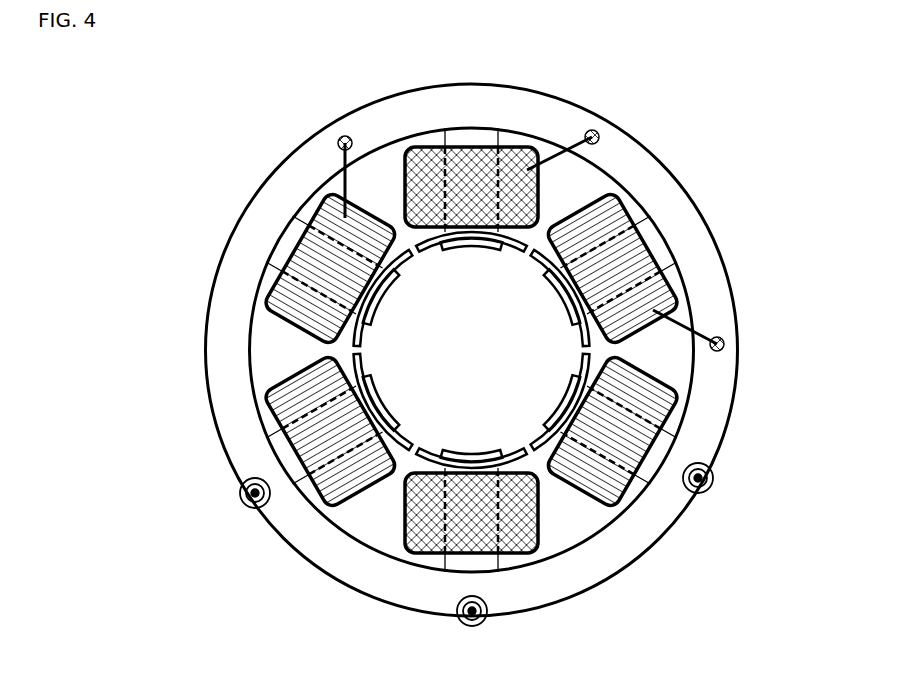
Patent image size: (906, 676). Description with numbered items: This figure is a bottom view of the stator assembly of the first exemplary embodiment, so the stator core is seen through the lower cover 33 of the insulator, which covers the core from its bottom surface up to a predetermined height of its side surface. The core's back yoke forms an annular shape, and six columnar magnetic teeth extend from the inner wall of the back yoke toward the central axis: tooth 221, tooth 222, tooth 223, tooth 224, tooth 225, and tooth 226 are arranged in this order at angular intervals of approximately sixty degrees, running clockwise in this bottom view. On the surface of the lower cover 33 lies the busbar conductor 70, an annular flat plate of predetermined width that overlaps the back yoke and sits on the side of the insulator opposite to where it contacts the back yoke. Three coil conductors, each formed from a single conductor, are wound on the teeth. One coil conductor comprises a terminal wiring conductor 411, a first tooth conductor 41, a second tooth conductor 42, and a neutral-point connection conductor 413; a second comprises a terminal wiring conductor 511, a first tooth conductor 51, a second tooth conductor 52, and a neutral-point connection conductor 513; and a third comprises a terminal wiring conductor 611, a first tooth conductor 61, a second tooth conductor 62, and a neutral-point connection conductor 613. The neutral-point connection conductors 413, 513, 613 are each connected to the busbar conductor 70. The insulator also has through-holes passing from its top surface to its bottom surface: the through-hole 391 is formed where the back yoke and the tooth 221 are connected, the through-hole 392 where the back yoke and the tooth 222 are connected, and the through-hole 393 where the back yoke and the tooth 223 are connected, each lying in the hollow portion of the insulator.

The busbar conductor 70 is at (617, 562).
The lower cover 33 is at (540, 515).
The second tooth conductor 52 is at (417, 157).
The first tooth conductor 51 is at (427, 540).
The second tooth conductor 42 is at (300, 298).
The first tooth conductor 41 is at (672, 410).
The second tooth conductor 62 is at (625, 192).
The first tooth conductor 61 is at (285, 405).
The tooth 221 is at (647, 467).
The tooth 222 is at (487, 555).
The tooth 223 is at (297, 475).
The tooth 224 is at (290, 257).
The tooth 225 is at (468, 145).
The tooth 226 is at (638, 255).
The neutral-point connection conductor 413 is at (343, 187).
The neutral-point connection conductor 513 is at (590, 128).
The neutral-point connection conductor 613 is at (720, 336).
The through-hole 391 is at (712, 477).
The through-hole 392 is at (477, 622).
The through-hole 393 is at (248, 502).
The terminal wiring conductor 411 is at (703, 485).
The terminal wiring conductor 511 is at (466, 617).
The terminal wiring conductor 611 is at (247, 493).